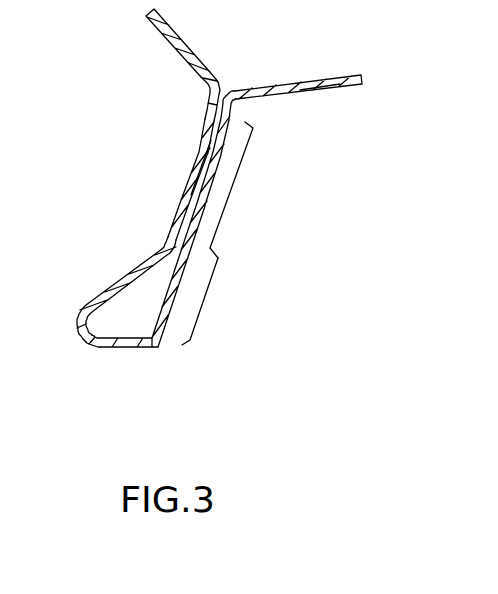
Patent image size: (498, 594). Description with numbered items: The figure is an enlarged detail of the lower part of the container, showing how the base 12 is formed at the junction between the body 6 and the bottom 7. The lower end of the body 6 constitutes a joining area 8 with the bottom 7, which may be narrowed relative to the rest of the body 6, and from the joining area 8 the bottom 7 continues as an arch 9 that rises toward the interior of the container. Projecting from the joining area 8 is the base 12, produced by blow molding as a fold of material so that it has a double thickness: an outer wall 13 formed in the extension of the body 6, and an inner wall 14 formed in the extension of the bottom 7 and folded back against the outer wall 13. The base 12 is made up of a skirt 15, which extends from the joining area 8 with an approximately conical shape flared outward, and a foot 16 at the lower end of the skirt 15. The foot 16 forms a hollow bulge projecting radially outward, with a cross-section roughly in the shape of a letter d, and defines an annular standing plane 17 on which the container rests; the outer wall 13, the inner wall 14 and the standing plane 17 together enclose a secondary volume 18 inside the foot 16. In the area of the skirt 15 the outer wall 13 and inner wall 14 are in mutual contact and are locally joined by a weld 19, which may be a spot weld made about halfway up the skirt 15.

The body 6 is at (151, 18).
The bottom 7 is at (337, 102).
The joining area 8 is at (197, 93).
The arch 9 is at (327, 84).
The base 12 is at (112, 170).
The outer wall 13 is at (203, 145).
The inner wall 14 is at (197, 213).
The skirt 15 is at (242, 190).
The foot 16 is at (210, 301).
The standing plane 17 is at (121, 348).
The secondary volume 18 is at (120, 301).
The weld 19 is at (192, 180).